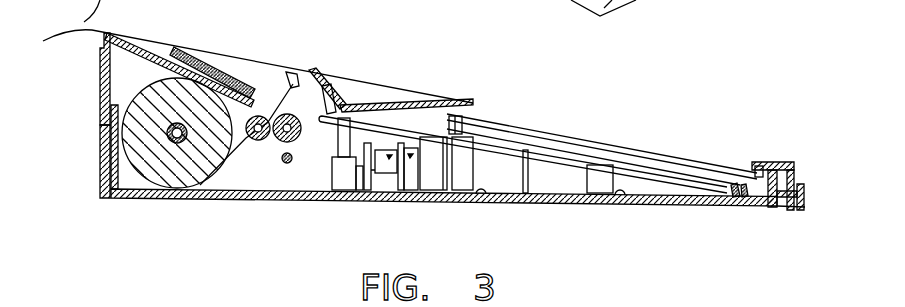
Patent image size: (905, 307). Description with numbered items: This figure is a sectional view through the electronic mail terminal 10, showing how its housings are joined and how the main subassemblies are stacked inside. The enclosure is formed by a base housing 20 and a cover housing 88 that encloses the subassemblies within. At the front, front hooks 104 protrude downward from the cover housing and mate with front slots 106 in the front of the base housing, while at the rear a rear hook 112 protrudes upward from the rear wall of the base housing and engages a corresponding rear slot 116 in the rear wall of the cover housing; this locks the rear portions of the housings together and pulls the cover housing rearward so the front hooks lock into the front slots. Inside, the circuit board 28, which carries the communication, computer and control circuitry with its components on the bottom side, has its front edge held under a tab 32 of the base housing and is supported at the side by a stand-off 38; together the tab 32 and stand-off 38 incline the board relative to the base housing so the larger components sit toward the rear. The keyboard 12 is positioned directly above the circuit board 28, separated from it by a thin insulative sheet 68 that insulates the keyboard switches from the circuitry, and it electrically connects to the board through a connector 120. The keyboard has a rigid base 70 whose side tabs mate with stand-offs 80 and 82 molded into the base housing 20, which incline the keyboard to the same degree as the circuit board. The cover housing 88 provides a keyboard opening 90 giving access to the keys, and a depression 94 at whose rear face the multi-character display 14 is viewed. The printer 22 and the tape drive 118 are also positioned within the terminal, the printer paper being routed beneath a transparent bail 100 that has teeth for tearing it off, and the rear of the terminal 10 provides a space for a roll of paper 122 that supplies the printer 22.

The electronic mail terminal 10 is at (340, 213).
The keyboard 12 is at (699, 110).
The multi-character display 14 is at (358, 92).
The base housing 20 is at (234, 200).
The printer 22 is at (276, 150).
The circuit board 28 is at (521, 156).
The tab 32 is at (740, 203).
The stand-off 38 is at (400, 192).
The thin insulative sheet 68 is at (554, 118).
The keyboard base 70 is at (628, 126).
The stand-off 80 is at (615, 207).
The stand-off 82 is at (478, 196).
The cover housing 88 is at (100, 78).
The keyboard opening 90 is at (490, 72).
The depression 94 is at (380, 104).
The transparent bail 100 is at (231, 72).
The front hook 104 is at (781, 200).
The front slot 106 is at (766, 208).
The rear hook 112 is at (100, 136).
The rear slot 116 is at (100, 114).
The tape drive 118 is at (330, 190).
The connector 120 is at (447, 130).
The roll of paper 122 is at (161, 81).